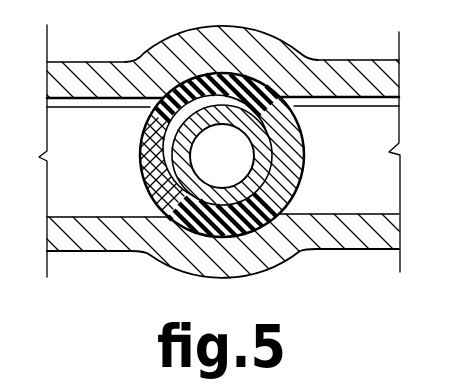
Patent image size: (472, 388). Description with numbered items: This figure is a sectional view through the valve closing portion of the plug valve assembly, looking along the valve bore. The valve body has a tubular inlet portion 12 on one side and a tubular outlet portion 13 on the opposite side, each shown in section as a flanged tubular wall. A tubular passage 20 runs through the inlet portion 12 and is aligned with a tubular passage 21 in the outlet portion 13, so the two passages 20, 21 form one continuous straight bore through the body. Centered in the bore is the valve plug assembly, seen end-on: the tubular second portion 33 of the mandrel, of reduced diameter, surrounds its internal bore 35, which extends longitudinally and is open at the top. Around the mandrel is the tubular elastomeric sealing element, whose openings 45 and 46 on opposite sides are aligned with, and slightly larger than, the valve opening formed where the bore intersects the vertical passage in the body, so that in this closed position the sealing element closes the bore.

The tubular inlet portion 12 is at (88, 62).
The tubular outlet portion 13 is at (348, 60).
The tubular passage 20 is at (67, 217).
The tubular passage 21 is at (399, 192).
The opening 45 is at (143, 132).
The opening 46 is at (286, 123).
The second portion of reduced diameter 33 is at (180, 168).
The internal bore 35 is at (256, 150).